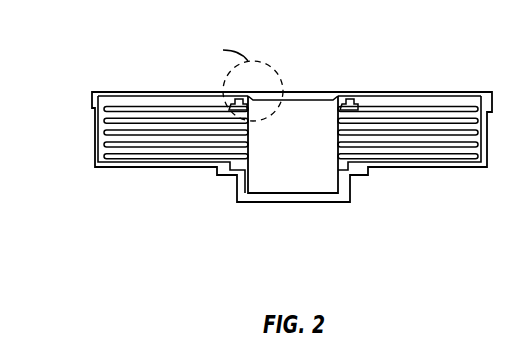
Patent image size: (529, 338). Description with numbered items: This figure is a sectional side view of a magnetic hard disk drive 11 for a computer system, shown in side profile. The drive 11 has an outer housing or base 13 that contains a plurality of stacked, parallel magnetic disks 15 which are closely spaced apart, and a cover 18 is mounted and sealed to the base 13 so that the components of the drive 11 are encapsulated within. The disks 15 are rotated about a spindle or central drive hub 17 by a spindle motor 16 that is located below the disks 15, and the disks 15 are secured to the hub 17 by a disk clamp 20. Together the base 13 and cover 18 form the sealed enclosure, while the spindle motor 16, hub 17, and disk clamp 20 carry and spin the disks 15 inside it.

The magnetic hard disk drive 11 is at (88, 45).
The base 13 is at (92, 167).
The magnetic disks 15 is at (418, 110).
The spindle motor 16 is at (307, 180).
The central drive hub 17 is at (297, 100).
The cover 18 is at (367, 92).
The disk clamp 20 is at (250, 97).